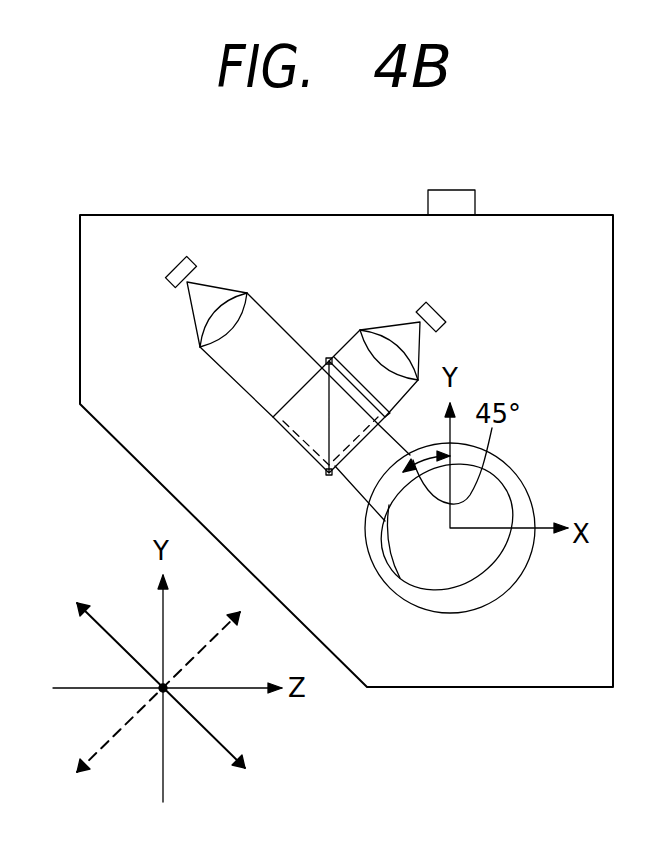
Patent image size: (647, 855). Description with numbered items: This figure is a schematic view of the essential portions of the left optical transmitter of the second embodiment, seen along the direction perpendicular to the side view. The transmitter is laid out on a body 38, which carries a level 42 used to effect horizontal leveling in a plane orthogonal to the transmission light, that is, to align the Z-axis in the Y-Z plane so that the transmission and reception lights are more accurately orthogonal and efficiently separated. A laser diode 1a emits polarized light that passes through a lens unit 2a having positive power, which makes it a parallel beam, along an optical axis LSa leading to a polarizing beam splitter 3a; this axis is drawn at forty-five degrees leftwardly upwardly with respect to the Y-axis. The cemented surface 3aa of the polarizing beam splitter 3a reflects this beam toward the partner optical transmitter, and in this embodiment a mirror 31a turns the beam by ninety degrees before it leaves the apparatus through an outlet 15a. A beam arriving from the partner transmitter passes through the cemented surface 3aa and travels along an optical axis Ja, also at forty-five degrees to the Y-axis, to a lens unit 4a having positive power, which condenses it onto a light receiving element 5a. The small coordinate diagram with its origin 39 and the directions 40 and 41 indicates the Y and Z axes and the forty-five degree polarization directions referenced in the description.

The housing 38 is at (225, 215).
The level 42 is at (476, 204).
The light receiving element 5a is at (167, 283).
The lens unit having positive power 4a is at (247, 292).
The optical axis Ja is at (280, 376).
The laser diode 1a is at (427, 302).
The lens unit having positive power 2a is at (360, 328).
The optical axis LSa is at (350, 358).
The polarizing beam splitter 3a is at (285, 440).
The cemented surface 3aa is at (347, 463).
The rotating target 15a is at (513, 588).
The mirror 31a is at (462, 588).
The origin point 39 is at (173, 692).
The first direction 40 is at (205, 735).
The second direction 41 is at (220, 633).